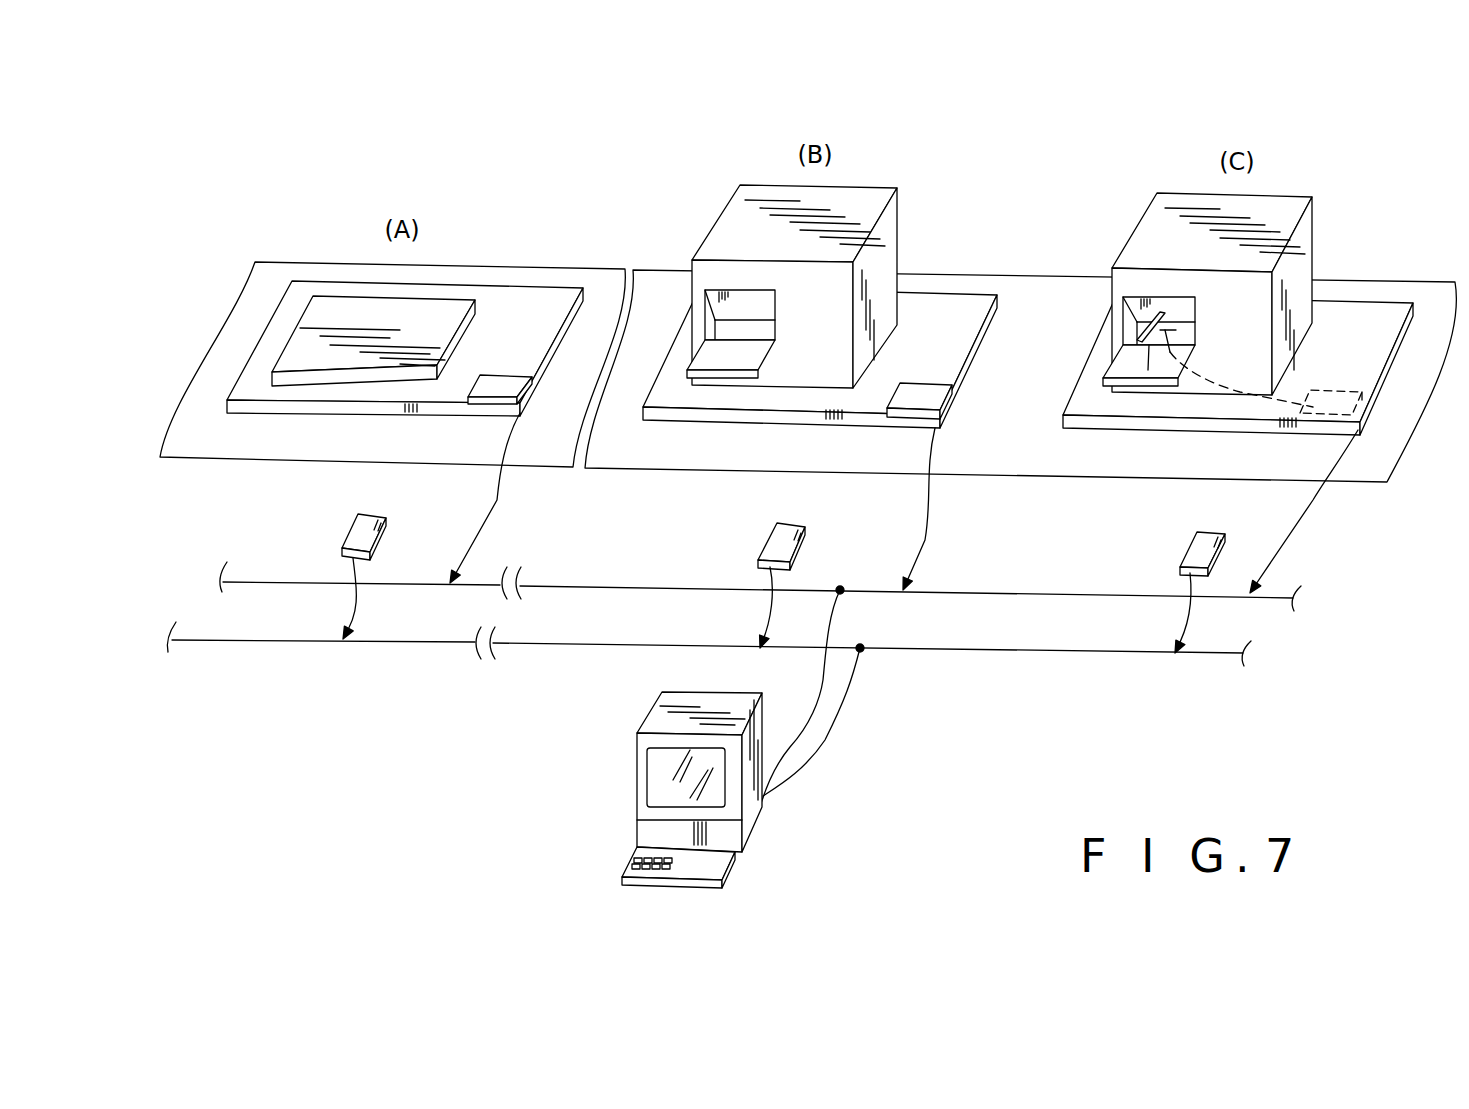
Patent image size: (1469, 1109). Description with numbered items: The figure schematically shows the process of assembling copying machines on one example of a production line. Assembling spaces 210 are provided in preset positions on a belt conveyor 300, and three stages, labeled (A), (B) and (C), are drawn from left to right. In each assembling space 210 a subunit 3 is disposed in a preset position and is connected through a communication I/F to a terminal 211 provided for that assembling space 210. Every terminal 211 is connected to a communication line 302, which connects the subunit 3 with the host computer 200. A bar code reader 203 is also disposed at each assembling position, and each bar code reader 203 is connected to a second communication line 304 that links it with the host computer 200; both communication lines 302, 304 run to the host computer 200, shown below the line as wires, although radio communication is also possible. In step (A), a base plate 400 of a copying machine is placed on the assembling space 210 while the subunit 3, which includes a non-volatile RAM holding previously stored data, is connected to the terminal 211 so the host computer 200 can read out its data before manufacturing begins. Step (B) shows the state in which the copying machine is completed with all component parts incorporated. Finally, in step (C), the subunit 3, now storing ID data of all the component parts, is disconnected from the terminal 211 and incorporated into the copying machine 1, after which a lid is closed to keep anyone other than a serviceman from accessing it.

The copying machine 1 is at (890, 250).
The subunit 3 is at (493, 381).
The host computer 200 is at (633, 752).
The bar code reader 203 is at (350, 533).
The assembling space 210 is at (550, 292).
The terminal 211 is at (523, 388).
The belt conveyor 300 is at (230, 447).
The communication line 302 is at (1287, 593).
The communication line 304 is at (1220, 657).
The base plate 400 is at (450, 315).